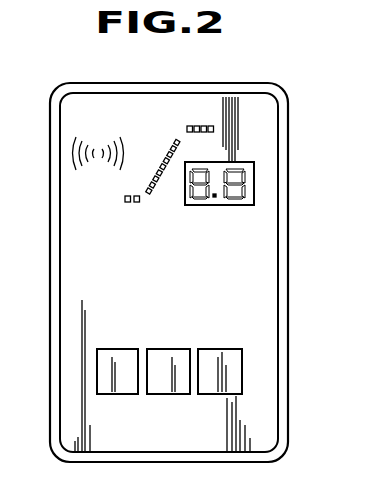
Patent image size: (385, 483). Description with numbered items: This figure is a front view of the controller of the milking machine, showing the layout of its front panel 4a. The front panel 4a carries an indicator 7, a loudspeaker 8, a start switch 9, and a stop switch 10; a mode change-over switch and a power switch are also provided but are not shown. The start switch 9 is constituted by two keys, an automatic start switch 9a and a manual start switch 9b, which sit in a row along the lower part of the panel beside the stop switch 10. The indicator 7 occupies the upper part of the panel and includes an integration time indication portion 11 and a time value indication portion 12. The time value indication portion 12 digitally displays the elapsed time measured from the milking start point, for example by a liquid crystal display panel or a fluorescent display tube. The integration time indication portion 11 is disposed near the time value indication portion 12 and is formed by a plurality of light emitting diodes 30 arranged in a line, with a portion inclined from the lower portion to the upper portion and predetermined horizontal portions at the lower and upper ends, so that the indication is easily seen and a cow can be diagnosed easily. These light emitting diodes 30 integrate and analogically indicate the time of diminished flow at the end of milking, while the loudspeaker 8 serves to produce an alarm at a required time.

The front panel 4a is at (271, 329).
The indicator 7 is at (246, 112).
The loudspeaker 8 is at (75, 158).
The integration time indication portion 11 is at (157, 147).
The light emitting diodes 30 is at (211, 126).
The time value indication portion 12 is at (236, 206).
The start switch 9 is at (143, 329).
The automatic start switch 9a is at (112, 357).
The manual start switch 9b is at (172, 355).
The stop switch 10 is at (222, 355).